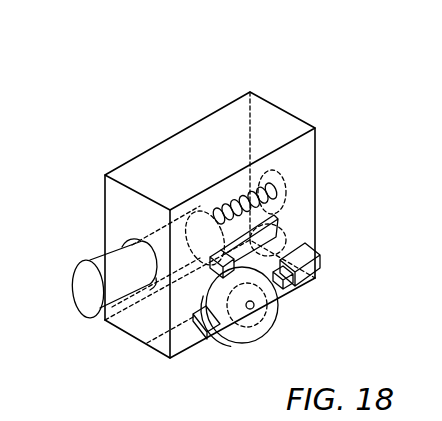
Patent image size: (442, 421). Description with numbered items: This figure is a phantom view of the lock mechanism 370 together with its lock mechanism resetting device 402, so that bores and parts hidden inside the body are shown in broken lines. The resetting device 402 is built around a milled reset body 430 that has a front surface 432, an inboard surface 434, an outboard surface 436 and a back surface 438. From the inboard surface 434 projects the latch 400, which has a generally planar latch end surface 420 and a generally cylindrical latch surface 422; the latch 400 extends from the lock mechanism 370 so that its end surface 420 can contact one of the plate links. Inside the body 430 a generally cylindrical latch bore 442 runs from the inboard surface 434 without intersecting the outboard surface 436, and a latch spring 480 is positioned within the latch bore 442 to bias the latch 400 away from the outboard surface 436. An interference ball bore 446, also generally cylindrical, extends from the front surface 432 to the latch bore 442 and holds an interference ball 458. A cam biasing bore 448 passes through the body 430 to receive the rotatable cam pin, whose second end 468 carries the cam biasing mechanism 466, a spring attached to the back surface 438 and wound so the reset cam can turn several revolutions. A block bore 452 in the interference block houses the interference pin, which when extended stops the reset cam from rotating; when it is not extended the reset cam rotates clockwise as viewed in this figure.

The lock mechanism 370 is at (112, 132).
The latch 400 is at (73, 320).
The lock mechanism resetting device 402 is at (351, 126).
The latch end surface 420 is at (84, 299).
The latch surface 422 is at (78, 264).
The reset body 430 is at (233, 86).
The front surface 432 is at (182, 342).
The inboard surface 434 is at (104, 192).
The outboard surface 436 is at (281, 170).
The back surface 438 is at (170, 133).
The latch bore 442 is at (122, 243).
The interference ball bore 446 is at (300, 236).
The cam biasing bore 448 is at (259, 328).
The block bore 452 is at (284, 294).
The interference ball 458 is at (284, 221).
The cam biasing mechanism 466 is at (120, 320).
The second end 468 is at (147, 343).
The latch spring 480 is at (232, 206).